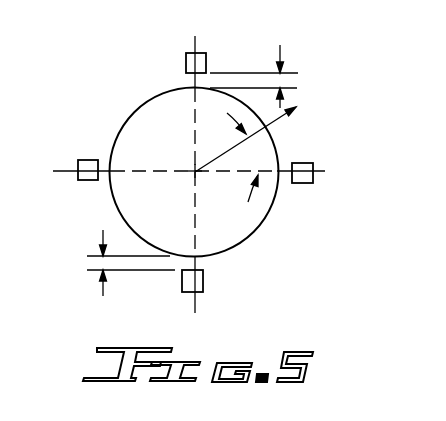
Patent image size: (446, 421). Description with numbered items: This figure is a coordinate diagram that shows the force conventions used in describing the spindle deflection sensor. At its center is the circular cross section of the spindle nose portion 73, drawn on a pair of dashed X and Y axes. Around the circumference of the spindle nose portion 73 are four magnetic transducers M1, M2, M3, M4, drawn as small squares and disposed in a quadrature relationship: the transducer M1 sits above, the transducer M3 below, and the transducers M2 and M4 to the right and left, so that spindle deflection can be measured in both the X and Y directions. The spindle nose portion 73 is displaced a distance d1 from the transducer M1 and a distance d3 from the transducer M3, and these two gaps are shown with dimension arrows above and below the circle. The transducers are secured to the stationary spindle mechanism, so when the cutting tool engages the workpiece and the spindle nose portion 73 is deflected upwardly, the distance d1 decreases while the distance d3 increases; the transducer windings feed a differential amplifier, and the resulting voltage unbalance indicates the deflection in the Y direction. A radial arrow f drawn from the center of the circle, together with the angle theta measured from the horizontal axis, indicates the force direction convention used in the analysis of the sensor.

The spindle nose portion 73 is at (156, 94).
The magnetic transducer M1 is at (211, 47).
The magnetic transducer M2 is at (321, 157).
The magnetic transducer M3 is at (207, 294).
The magnetic transducer M4 is at (75, 154).
The distance d1 is at (262, 65).
The distance d3 is at (122, 265).
The force / radial direction vector f is at (254, 131).
The angle theta is at (242, 157).